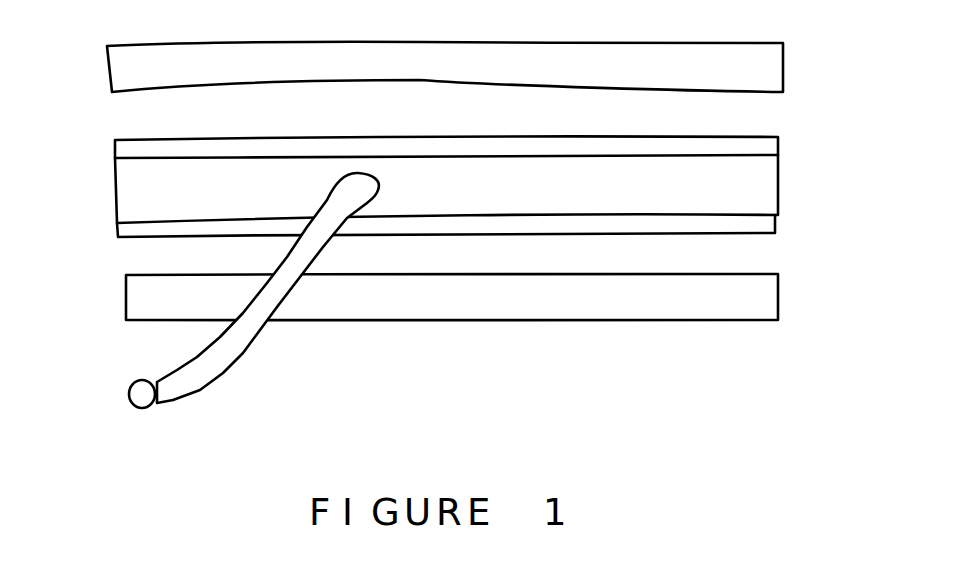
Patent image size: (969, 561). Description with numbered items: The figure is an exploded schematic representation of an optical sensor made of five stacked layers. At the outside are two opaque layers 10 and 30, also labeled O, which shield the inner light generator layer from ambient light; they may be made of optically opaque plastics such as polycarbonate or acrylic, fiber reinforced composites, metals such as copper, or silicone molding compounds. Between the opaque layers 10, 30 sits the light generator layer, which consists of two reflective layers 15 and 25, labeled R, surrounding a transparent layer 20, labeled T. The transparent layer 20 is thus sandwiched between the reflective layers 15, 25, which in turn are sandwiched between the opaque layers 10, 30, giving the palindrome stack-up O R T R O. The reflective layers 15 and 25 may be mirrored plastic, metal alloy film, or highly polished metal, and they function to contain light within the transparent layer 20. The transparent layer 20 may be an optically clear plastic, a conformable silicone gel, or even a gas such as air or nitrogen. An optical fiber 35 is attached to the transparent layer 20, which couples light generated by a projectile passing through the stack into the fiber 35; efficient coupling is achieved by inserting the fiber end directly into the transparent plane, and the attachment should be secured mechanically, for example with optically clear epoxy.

The opaque layer 10 is at (770, 68).
The reflective layer 15 is at (763, 146).
The transparent layer 20 is at (757, 190).
The reflective layer 25 is at (760, 225).
The opaque layer 30 is at (757, 300).
The optical fiber 35 is at (210, 357).
The opaque layer label O is at (124, 66).
The reflective layer label R is at (127, 149).
The transparent layer label T is at (127, 186).